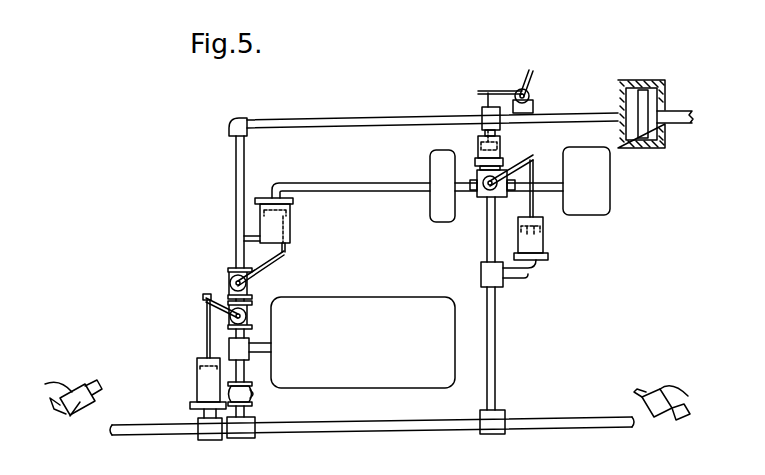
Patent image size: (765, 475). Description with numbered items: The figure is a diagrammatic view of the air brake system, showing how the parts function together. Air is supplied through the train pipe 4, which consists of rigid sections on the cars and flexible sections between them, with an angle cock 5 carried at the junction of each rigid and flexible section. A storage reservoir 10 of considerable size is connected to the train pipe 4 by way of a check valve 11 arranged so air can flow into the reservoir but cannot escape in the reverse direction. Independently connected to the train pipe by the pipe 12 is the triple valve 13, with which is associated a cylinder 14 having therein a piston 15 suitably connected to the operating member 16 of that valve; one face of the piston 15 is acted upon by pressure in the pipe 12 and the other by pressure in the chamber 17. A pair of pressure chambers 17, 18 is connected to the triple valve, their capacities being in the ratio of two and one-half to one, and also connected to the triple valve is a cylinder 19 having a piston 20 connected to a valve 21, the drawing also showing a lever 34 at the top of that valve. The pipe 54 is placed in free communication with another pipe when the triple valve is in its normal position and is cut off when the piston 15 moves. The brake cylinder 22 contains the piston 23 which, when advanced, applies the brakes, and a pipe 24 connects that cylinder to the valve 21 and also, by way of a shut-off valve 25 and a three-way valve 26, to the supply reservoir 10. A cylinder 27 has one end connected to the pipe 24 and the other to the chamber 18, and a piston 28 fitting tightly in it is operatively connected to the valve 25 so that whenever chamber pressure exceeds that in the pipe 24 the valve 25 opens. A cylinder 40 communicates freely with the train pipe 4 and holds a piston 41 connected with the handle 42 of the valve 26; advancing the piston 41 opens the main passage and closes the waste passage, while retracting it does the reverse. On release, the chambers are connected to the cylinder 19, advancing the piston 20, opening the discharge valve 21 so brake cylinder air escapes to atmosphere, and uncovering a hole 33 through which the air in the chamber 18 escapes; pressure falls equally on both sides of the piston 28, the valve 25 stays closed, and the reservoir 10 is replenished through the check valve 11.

The train pipe 4 is at (165, 435).
The angle cock 5 is at (77, 410).
The storage reservoir 10 is at (338, 296).
The check valve 11 is at (253, 395).
The pipe 12 is at (492, 318).
The triple valve 13 is at (481, 197).
The cylinder 14 is at (543, 247).
The piston 15 is at (543, 231).
The operating member 16 is at (508, 172).
The pressure chamber 17 is at (586, 181).
The pressure chamber 18 is at (430, 162).
The cylinder 19 is at (479, 151).
The piston 20 is at (479, 143).
The valve 21 is at (530, 98).
The brake cylinder 22 is at (636, 84).
The piston 23 is at (641, 150).
The pipe 24 is at (355, 120).
The shut-off valve 25 is at (229, 281).
The three-way valve 26 is at (250, 312).
The cylinder 27 is at (291, 237).
The piston 28 is at (292, 220).
The hole 33 is at (496, 141).
The lever 34 is at (531, 78).
The cylinder 40 is at (197, 388).
The piston 41 is at (197, 366).
The handle 42 is at (203, 300).
The pipe 54 is at (480, 173).